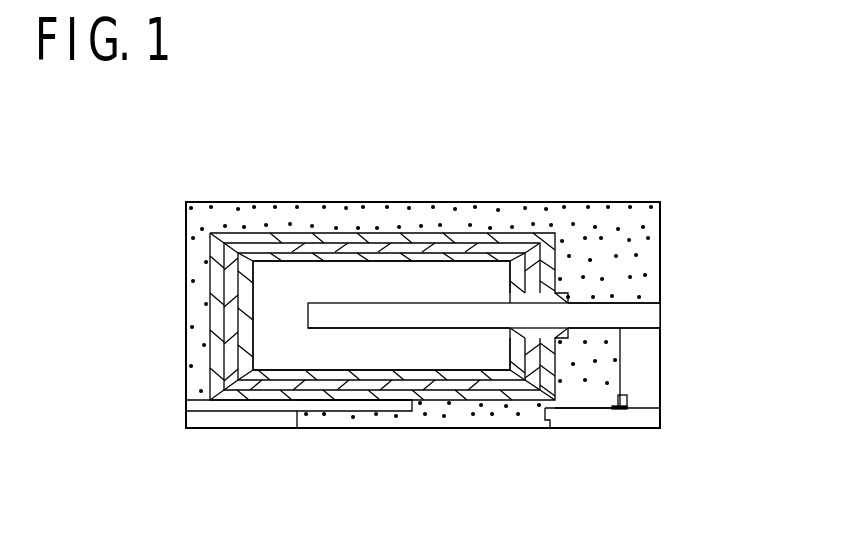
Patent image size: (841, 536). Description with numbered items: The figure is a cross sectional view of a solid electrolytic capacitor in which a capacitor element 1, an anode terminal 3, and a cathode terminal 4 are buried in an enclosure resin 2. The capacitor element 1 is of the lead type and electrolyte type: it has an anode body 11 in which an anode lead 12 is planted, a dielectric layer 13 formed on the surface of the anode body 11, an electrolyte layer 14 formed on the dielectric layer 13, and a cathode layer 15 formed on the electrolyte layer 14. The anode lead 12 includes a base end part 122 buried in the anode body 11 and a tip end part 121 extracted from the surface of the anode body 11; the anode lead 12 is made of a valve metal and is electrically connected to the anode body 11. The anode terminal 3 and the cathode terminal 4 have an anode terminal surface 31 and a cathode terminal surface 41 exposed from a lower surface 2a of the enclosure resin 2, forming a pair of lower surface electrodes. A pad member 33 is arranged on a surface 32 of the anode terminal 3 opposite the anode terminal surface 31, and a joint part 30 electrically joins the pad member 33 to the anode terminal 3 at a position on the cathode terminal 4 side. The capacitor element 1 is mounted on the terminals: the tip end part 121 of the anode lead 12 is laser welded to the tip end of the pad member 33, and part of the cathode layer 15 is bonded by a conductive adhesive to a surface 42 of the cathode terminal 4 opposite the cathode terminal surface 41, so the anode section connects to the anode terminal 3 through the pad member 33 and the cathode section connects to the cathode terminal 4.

The capacitor element 1 is at (315, 146).
The anode body 11 is at (320, 282).
The anode lead 12 is at (348, 316).
The tip end part 121 is at (623, 299).
The base end part 122 is at (380, 331).
The dielectric layer 13 is at (388, 255).
The electrolyte layer 14 is at (434, 250).
The cathode layer 15 is at (461, 238).
The enclosure resin 2 is at (251, 213).
The lower surface 2a is at (426, 428).
The anode terminal 3 is at (642, 413).
The joint part 30 is at (628, 400).
The anode terminal surface 31 is at (568, 427).
The surface 32 is at (598, 400).
The pad member 33 is at (643, 348).
The cathode terminal 4 is at (257, 413).
The cathode terminal surface 41 is at (210, 427).
The surface 42 is at (318, 392).